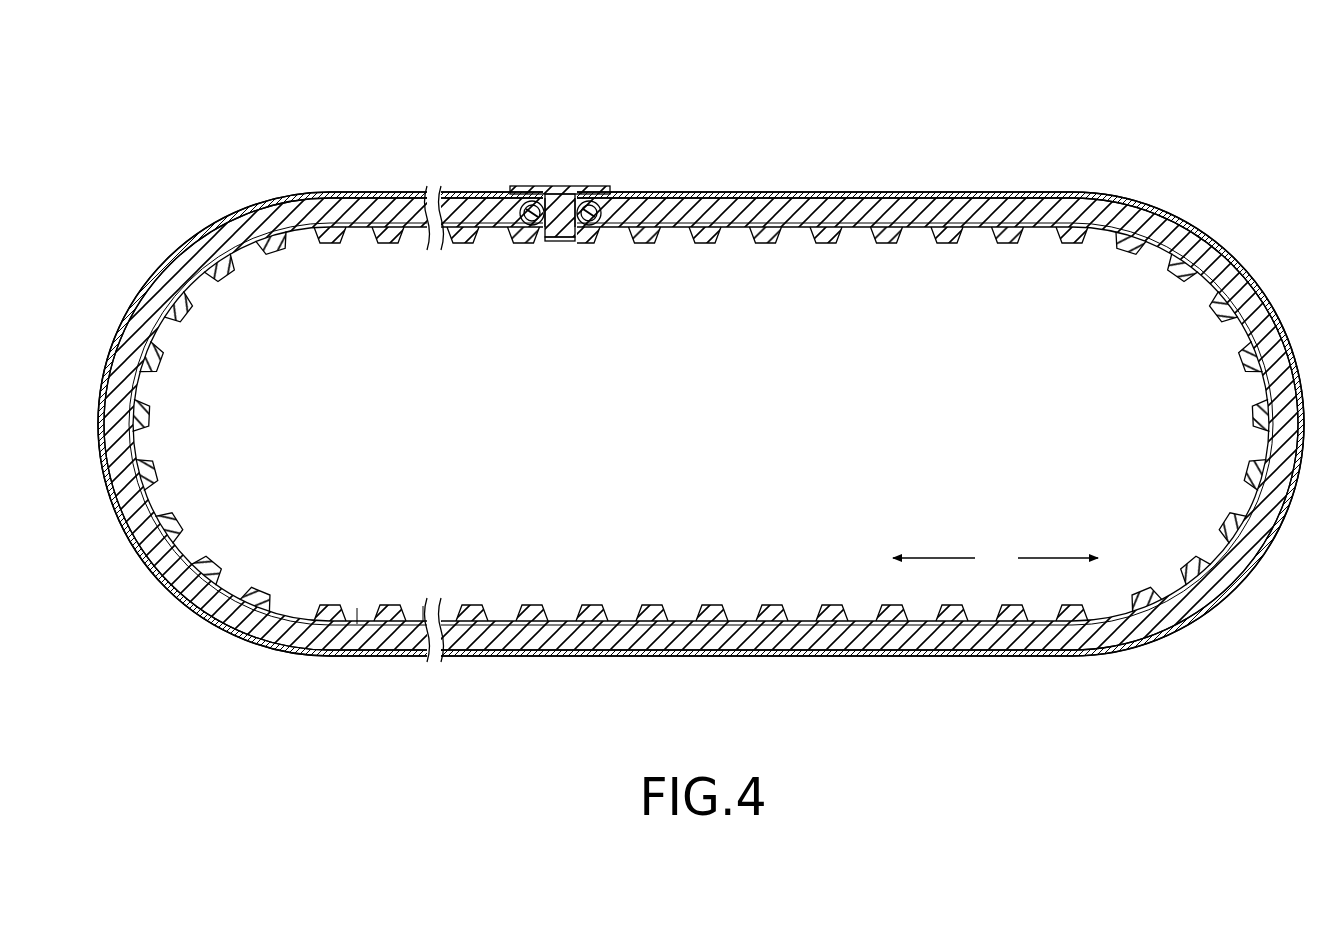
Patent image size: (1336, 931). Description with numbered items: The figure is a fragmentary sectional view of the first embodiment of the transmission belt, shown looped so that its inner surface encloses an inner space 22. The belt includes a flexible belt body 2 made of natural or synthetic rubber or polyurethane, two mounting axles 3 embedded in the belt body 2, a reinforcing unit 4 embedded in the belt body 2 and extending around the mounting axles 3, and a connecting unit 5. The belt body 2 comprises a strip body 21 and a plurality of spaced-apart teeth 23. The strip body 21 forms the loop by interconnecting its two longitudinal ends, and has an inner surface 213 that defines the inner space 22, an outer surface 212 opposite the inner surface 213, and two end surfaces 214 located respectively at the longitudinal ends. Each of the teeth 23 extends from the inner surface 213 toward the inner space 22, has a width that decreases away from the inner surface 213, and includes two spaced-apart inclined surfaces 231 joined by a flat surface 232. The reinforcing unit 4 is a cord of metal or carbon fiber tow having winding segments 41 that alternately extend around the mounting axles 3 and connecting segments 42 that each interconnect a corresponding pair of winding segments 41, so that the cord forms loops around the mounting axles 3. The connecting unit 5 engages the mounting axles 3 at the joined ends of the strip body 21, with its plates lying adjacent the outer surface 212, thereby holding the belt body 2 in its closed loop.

The belt body 2 is at (701, 388).
The strip body 21 is at (968, 206).
The outer surface 212 is at (880, 197).
The inner surface 213 is at (1042, 234).
The end surfaces 214 is at (545, 206).
The inner space 22 is at (755, 530).
The teeth 23 is at (395, 569).
The inclined surfaces 231 is at (357, 617).
The flat surface 232 is at (390, 606).
The mounting axles 3 is at (520, 213).
The reinforcing unit 4 is at (737, 191).
The winding segments 41 is at (550, 230).
The connecting segments 42 is at (797, 196).
The connecting unit 5 is at (541, 175).